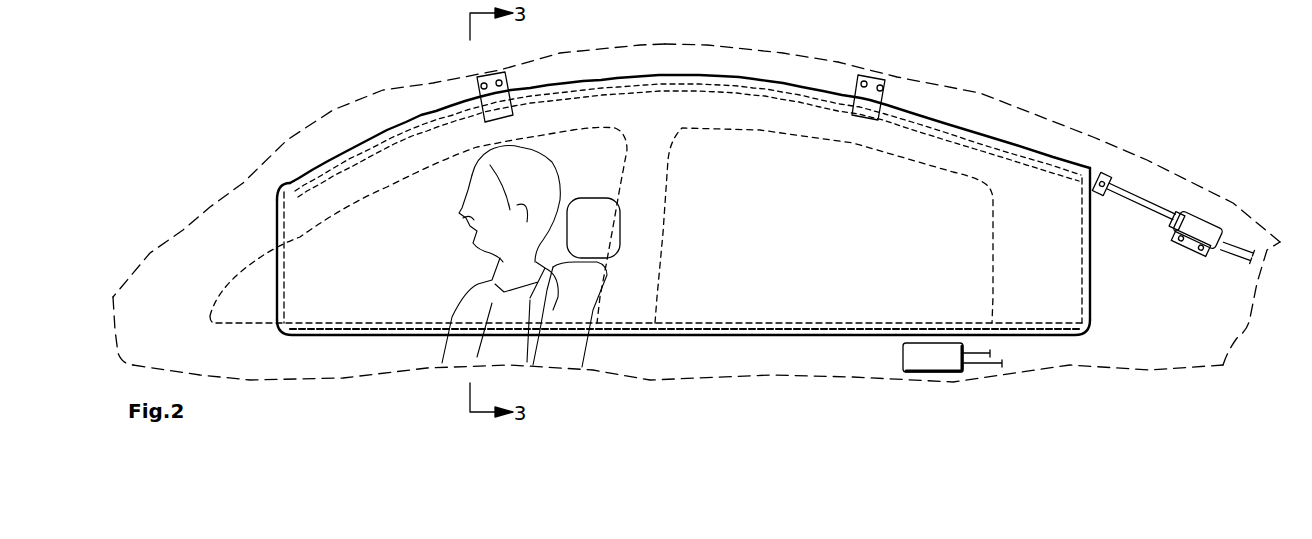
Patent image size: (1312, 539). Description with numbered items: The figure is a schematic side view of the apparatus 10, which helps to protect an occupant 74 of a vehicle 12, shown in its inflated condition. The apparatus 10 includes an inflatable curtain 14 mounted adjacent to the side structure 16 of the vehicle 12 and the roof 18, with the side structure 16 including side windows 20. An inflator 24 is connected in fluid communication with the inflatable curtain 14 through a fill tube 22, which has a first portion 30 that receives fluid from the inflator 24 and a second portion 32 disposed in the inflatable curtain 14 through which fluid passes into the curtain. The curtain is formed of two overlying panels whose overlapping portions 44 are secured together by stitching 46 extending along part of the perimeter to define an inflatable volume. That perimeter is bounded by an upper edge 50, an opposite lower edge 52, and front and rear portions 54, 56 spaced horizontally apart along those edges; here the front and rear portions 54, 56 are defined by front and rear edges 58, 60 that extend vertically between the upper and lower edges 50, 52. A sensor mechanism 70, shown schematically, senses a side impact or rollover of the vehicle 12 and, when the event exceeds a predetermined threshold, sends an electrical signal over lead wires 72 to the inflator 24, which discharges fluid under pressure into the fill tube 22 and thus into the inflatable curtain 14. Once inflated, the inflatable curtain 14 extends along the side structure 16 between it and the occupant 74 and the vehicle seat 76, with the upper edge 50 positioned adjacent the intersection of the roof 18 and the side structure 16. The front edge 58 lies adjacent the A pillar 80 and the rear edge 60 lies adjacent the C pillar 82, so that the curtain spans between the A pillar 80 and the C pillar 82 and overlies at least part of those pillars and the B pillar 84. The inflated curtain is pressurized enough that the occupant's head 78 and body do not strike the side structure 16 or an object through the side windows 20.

The apparatus 10 is at (393, 58).
The vehicle 12 is at (327, 143).
The inflatable curtain 14 is at (317, 290).
The side structure 16 is at (682, 363).
The roof 18 is at (838, 62).
The side windows 20 is at (343, 310).
The fill tube 22 is at (1113, 187).
The inflator 24 is at (1200, 227).
The first portion 30 is at (1147, 205).
The second portion 32 is at (555, 97).
The overlapping portions 44 is at (277, 290).
The stitching 46 is at (407, 330).
The upper edge 50 is at (660, 75).
The lower edge 52 is at (640, 337).
The front portion 54 is at (310, 213).
The rear portion 56 is at (1063, 233).
The front edge 58 is at (277, 266).
The rear edge 60 is at (1090, 290).
The sensor mechanism 70 is at (935, 358).
The lead wires 72 is at (1237, 242).
The occupant 74 is at (488, 226).
The vehicle seat 76 is at (587, 283).
The occupant's head 78 is at (507, 170).
The A pillar 80 is at (227, 238).
The C pillar 82 is at (1140, 323).
The B pillar 84 is at (643, 200).